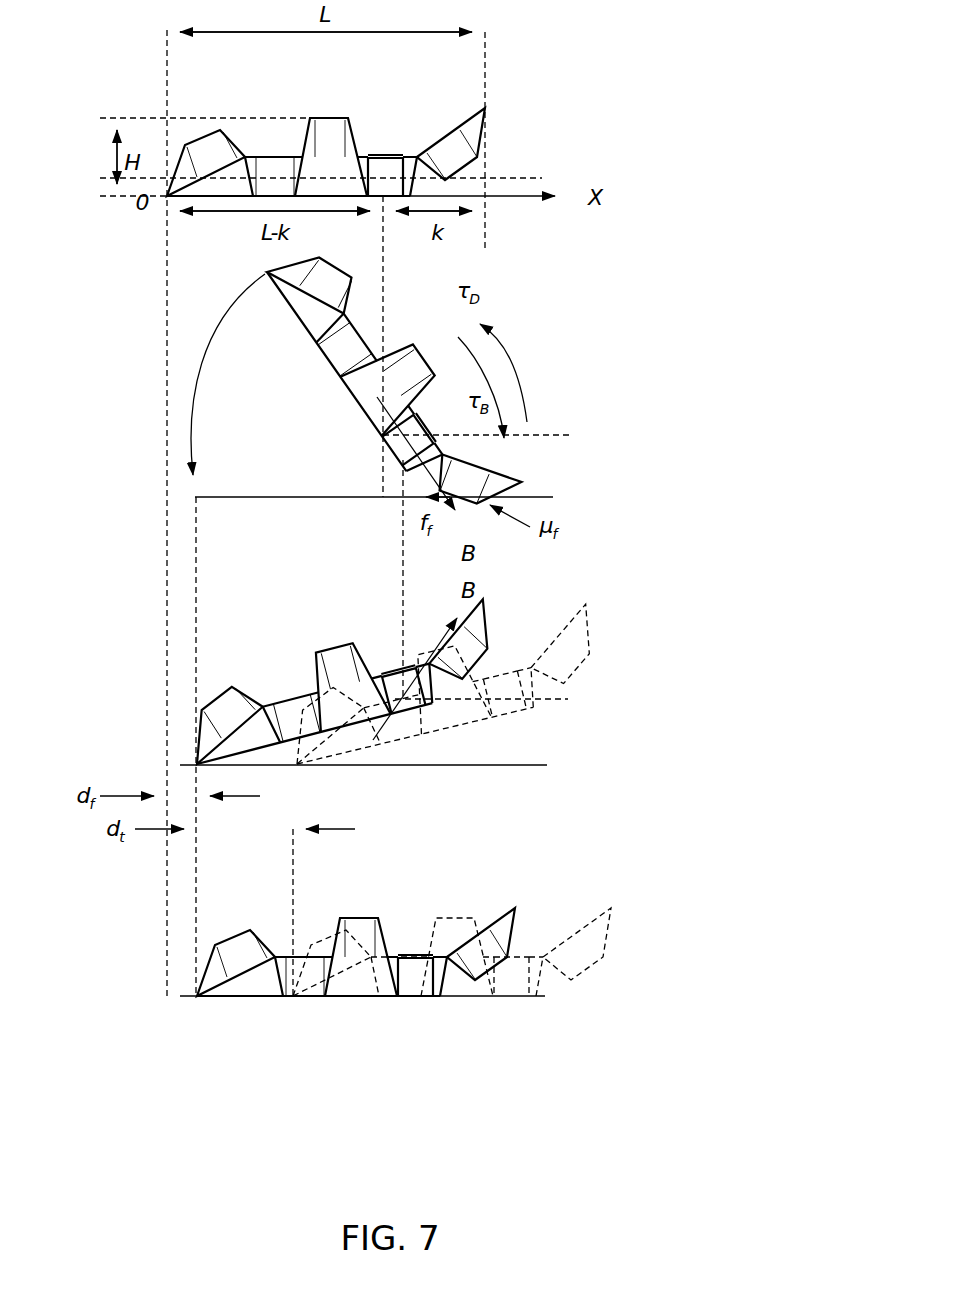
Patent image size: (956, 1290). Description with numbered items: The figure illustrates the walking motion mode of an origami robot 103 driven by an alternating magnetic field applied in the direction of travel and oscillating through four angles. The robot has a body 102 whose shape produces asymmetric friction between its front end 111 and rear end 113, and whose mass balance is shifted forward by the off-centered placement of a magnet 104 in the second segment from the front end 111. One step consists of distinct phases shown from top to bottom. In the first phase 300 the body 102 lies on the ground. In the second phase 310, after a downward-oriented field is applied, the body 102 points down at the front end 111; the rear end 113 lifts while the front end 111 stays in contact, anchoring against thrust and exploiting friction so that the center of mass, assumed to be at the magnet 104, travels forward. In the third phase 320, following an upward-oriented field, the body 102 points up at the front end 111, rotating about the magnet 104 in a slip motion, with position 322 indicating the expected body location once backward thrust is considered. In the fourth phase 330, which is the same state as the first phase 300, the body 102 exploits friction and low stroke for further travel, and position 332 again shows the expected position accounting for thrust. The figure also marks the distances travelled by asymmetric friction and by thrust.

The body 102 is at (460, 150).
The origami robot 103 is at (333, 108).
The magnet 104 is at (385, 155).
The front end 111 is at (485, 108).
The rear end 113 is at (167, 190).
The first phase 300 is at (355, 540).
The second phase 310 is at (443, 262).
The third phase 320 is at (496, 615).
The expected position of the body portion considering thrust 322 is at (584, 690).
The fourth phase 330 is at (535, 887).
The expected position of the body portion considering thrust 332 is at (527, 1008).